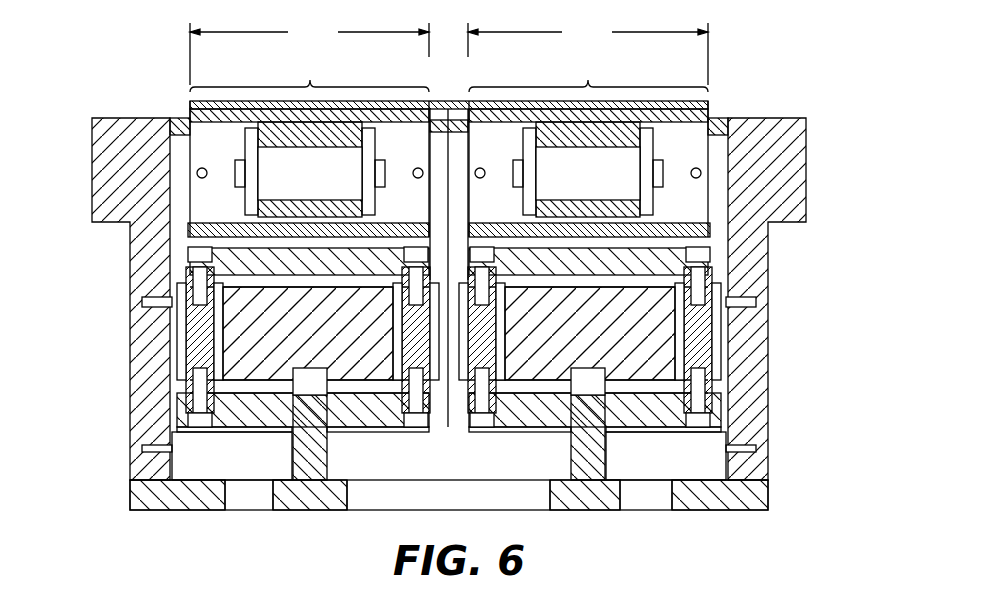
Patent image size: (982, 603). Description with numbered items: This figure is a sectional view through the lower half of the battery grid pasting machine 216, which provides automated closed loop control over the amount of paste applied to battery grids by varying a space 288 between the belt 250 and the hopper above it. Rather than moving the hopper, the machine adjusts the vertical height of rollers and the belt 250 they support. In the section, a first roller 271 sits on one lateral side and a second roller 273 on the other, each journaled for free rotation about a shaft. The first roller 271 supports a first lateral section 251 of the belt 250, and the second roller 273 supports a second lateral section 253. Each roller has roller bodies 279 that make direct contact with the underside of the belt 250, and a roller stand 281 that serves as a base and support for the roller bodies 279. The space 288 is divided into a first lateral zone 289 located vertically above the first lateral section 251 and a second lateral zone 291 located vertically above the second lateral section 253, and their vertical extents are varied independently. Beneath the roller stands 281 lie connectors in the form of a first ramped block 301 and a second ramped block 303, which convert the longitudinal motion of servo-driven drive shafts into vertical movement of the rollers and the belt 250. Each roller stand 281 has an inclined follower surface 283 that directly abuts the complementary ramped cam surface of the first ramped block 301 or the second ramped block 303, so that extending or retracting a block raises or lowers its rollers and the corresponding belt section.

The battery grid pasting machine 216 is at (146, 73).
The belt 250 is at (716, 96).
The first lateral section 251 is at (308, 242).
The second lateral section 253 is at (590, 242).
The first roller 271 is at (186, 184).
The second roller 273 is at (714, 165).
The roller bodies 279 is at (293, 128).
The roller stand 281 is at (256, 336).
The surface 283 is at (252, 432).
The space 288 is at (434, 81).
The first lateral zone 289 is at (309, 52).
The second lateral zone 291 is at (588, 52).
The first ramped block 301 is at (307, 456).
The second ramped block 303 is at (585, 455).